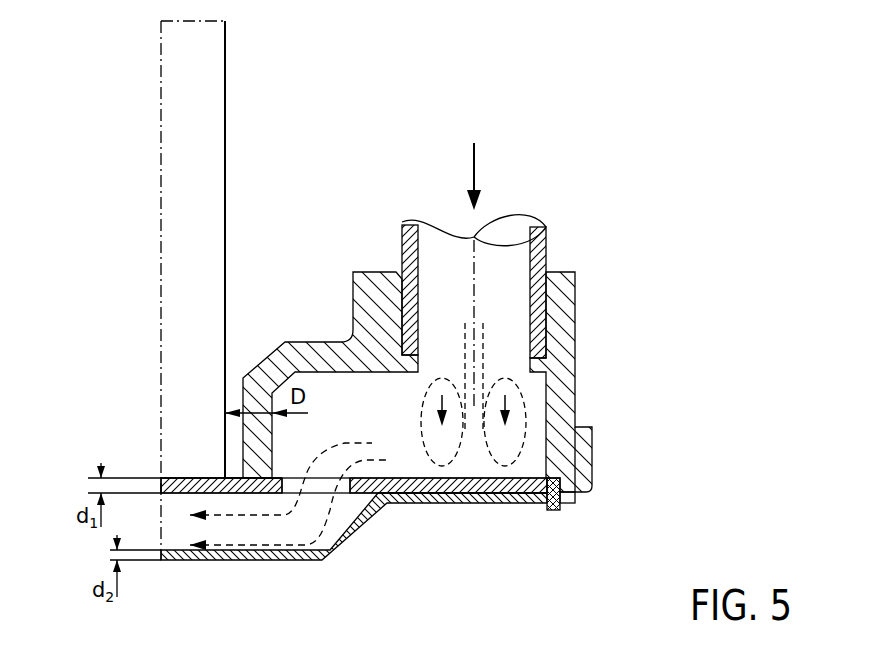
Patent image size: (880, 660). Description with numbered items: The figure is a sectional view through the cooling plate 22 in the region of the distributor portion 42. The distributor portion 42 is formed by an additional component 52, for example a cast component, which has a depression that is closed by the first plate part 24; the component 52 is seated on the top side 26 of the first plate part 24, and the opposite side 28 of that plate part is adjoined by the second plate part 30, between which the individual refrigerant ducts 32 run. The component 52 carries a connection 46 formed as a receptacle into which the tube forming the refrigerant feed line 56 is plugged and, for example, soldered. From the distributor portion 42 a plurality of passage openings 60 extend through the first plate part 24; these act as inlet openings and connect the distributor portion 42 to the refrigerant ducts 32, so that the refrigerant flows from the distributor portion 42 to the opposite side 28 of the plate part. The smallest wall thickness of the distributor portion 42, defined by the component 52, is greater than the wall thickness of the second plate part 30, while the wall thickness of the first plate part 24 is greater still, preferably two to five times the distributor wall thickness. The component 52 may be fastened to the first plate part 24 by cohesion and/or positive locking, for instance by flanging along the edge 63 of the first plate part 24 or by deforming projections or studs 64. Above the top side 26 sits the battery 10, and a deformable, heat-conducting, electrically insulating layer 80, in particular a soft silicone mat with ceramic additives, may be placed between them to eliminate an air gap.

The battery 10 is at (197, 173).
The cooling plate 22 is at (624, 415).
The first plate part 24 is at (195, 480).
The top side 26 is at (229, 478).
The side 28 is at (364, 495).
The second plate part 30 is at (232, 560).
The refrigerant ducts 32 is at (252, 540).
The distributor portion 42 is at (338, 400).
The connection 46 is at (494, 253).
The component 52 is at (565, 340).
The refrigerant feed line 56 is at (540, 247).
The passage openings 60 is at (315, 487).
The edge 63 is at (593, 467).
The studs 64 is at (553, 508).
The heat-conducting, electrically insulating layer 80 is at (186, 478).